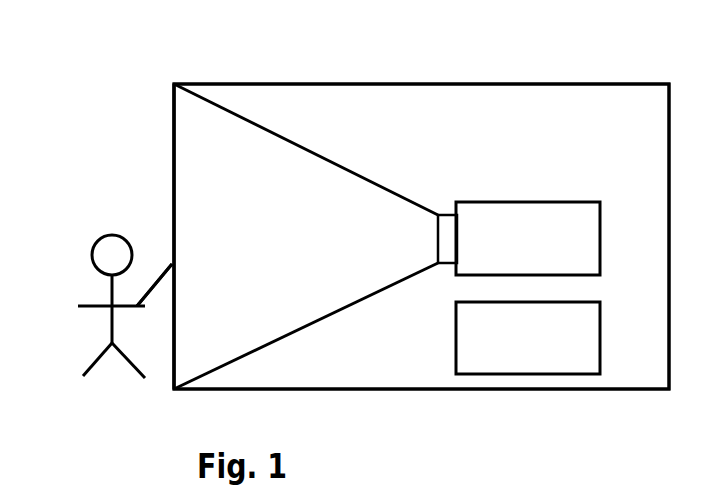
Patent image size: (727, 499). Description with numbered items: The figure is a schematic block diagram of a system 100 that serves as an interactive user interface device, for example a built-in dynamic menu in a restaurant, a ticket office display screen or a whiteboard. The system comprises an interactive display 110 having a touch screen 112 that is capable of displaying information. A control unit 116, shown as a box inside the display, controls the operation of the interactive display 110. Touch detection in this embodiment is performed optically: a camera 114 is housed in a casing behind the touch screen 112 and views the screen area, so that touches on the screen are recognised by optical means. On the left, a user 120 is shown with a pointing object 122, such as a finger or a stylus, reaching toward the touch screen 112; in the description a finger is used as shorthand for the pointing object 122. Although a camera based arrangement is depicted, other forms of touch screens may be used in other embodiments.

The system 100 is at (231, 45).
The interactive display 110 is at (478, 48).
The touch screen 112 is at (174, 135).
The camera 114 is at (395, 202).
The control unit 116 is at (528, 390).
The user 120 is at (40, 455).
The pointing object 122 is at (170, 262).